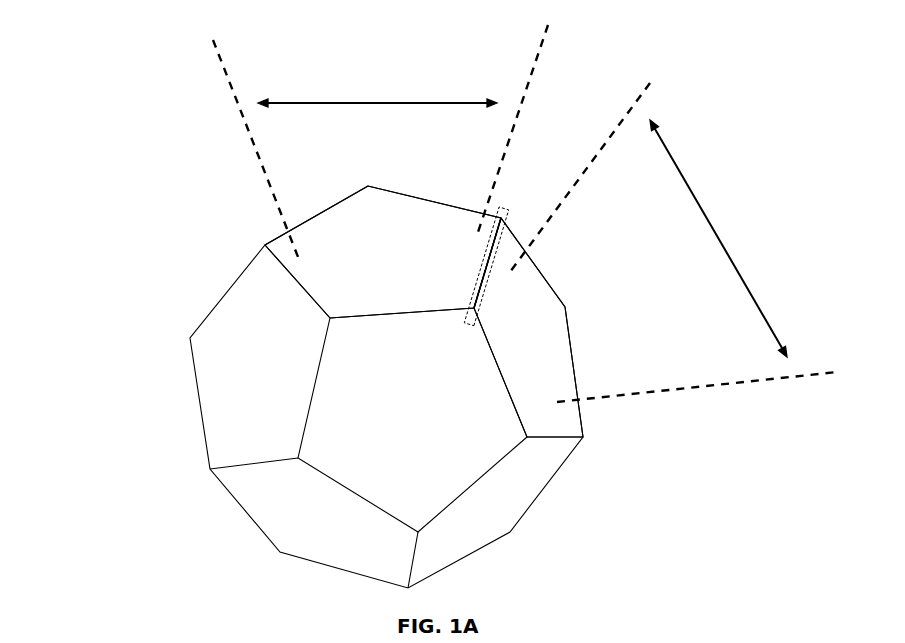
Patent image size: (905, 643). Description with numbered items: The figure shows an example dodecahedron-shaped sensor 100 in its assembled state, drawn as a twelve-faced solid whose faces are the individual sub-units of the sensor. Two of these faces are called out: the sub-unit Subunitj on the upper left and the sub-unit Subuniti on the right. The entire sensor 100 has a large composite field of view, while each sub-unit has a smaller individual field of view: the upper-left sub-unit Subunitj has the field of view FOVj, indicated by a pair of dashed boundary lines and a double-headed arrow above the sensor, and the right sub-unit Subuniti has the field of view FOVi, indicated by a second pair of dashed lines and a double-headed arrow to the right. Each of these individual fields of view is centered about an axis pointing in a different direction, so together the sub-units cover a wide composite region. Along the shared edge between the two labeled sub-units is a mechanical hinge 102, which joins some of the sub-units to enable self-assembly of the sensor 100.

The dodecahedron-shaped sensor 100 is at (143, 272).
The mechanical hinge 102 is at (497, 222).
The individual field of view of Subunit j FOVj is at (380, 143).
The individual field of view of Subunit i FOVi is at (673, 242).
The Subunit j Subunitj is at (400, 232).
The Subunit i Subuniti is at (535, 330).